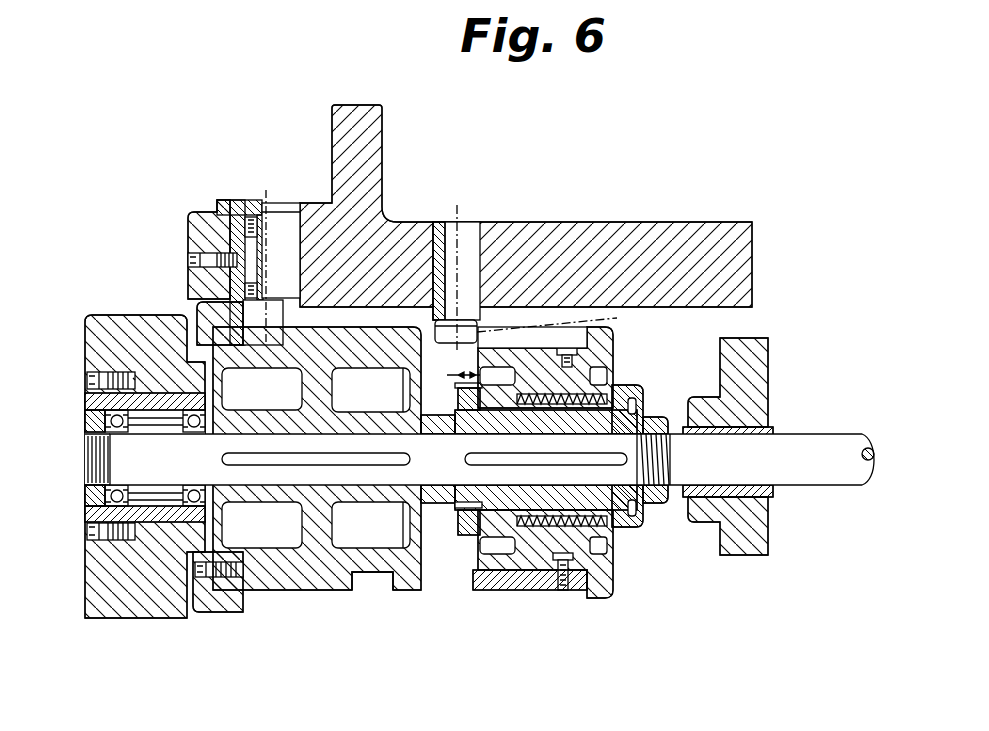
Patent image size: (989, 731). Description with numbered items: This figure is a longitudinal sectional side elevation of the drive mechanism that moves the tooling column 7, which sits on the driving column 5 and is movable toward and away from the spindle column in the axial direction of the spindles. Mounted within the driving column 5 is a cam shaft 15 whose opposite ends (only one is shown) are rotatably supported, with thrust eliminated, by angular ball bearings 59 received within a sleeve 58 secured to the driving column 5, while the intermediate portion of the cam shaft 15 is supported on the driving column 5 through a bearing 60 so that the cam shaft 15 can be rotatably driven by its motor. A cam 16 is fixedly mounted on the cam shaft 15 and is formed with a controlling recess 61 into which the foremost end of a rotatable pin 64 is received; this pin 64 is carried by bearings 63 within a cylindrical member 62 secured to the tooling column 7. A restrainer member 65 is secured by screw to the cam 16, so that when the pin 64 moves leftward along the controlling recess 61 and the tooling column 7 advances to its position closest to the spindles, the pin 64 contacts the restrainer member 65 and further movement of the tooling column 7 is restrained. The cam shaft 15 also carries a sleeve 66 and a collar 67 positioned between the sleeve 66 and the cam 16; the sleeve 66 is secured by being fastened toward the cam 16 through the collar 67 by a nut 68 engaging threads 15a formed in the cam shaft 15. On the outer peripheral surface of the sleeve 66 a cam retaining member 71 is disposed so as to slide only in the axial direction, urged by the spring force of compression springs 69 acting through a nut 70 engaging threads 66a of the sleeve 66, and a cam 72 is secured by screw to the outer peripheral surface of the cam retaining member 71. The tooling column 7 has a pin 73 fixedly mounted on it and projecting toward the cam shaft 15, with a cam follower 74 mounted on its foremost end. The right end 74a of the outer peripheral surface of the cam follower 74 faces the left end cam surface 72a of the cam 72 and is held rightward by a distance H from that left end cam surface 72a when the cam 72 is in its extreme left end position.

The driving column 5 is at (143, 605).
The tooling column 7 is at (668, 232).
The cam shaft 15 is at (843, 483).
The threads 15a is at (658, 506).
The cam 16 is at (296, 575).
The sleeve 58 is at (88, 402).
The angular ball bearings 59 is at (116, 430).
The bearing 60 is at (775, 432).
The controlling recess 61 is at (373, 585).
The cylindrical member 62 is at (243, 200).
The bearings 63 is at (237, 228).
The rotatable pin 64 is at (262, 268).
The restrainer member 65 is at (204, 312).
The sleeve 66 is at (628, 530).
The threads 66a is at (466, 540).
The collar 67 is at (437, 503).
The nut 68 is at (645, 422).
The compression springs 69 is at (552, 400).
The nut 70 is at (468, 533).
The cam retaining member 71 is at (598, 600).
The cam 72 is at (546, 606).
The left end cam surface 72a is at (478, 330).
The pin 73 is at (438, 222).
The cam follower 74 is at (457, 378).
The right end 74a is at (530, 311).